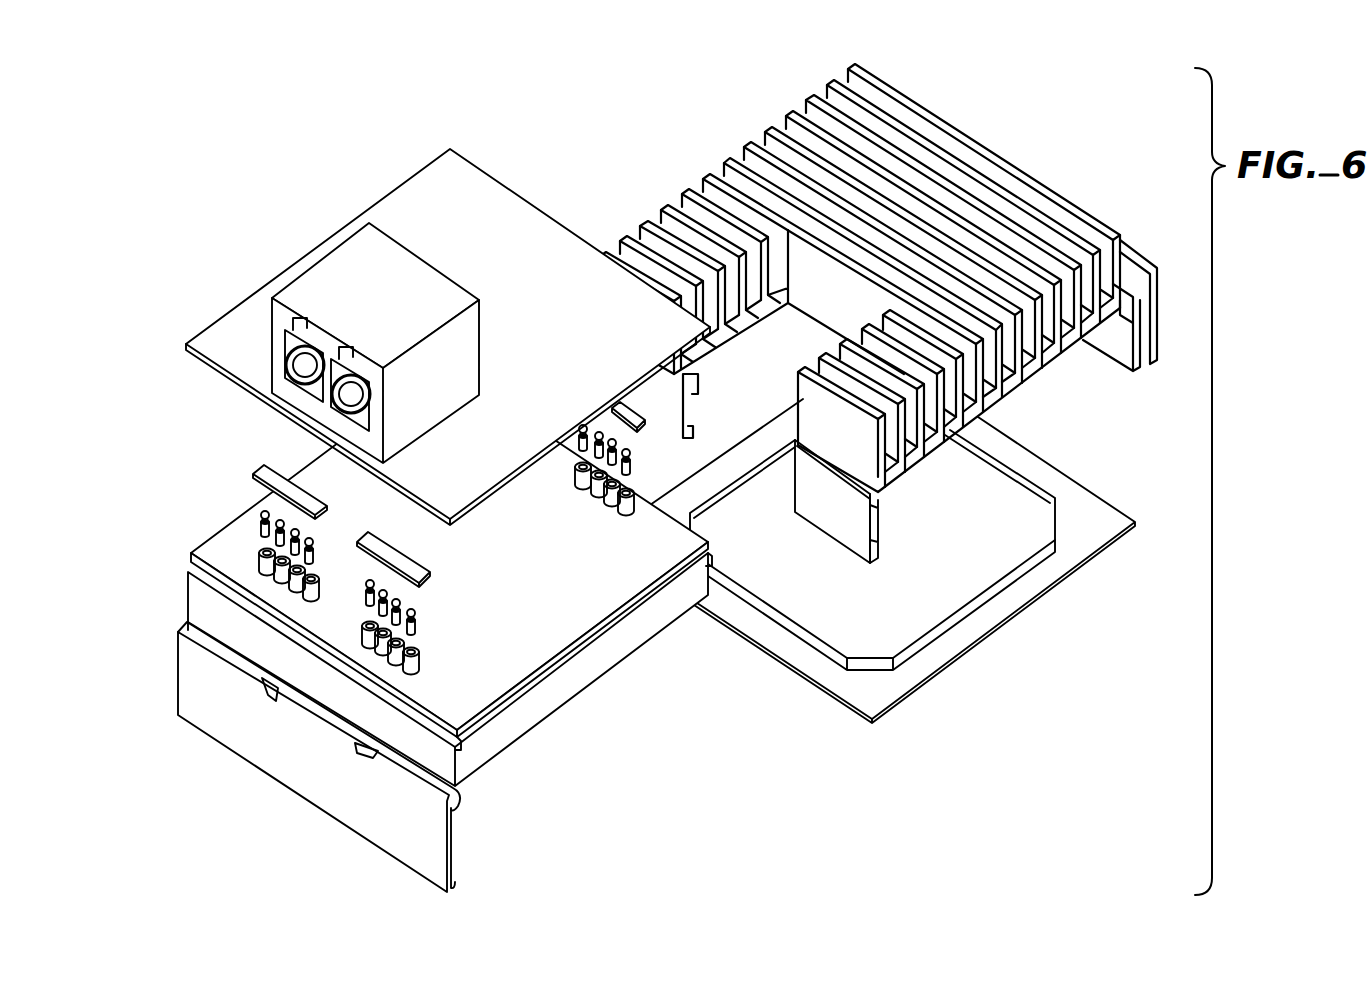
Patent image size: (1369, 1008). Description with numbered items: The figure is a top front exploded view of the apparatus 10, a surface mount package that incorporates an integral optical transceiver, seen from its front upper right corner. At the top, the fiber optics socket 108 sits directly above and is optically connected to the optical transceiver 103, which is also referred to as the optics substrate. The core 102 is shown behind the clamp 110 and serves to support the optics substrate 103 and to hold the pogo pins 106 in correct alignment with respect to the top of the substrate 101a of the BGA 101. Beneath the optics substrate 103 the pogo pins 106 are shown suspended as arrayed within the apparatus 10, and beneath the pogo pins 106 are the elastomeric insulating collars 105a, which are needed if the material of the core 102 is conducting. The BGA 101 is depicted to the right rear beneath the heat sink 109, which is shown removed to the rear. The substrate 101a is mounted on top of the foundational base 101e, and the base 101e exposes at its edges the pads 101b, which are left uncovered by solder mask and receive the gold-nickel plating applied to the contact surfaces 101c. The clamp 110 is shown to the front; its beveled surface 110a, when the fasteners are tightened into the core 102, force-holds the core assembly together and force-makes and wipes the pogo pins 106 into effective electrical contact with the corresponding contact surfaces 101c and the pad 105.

The apparatus 10 is at (238, 146).
The BGA 101 is at (892, 561).
The substrate 101a is at (945, 616).
The pads 101b is at (1105, 491).
The contact surfaces 101c is at (835, 584).
The foundational base 101e is at (1033, 648).
The core 102 is at (583, 612).
The optical transceiver 103 is at (586, 344).
The pad 105 is at (238, 479).
The elastomeric insulating collars 105a is at (358, 624).
The pogo pins 106 is at (360, 580).
The fiber optics socket 108 is at (390, 304).
The heat sink 109 is at (980, 150).
The clamp 110 is at (282, 757).
The beveled surface 110a is at (200, 637).